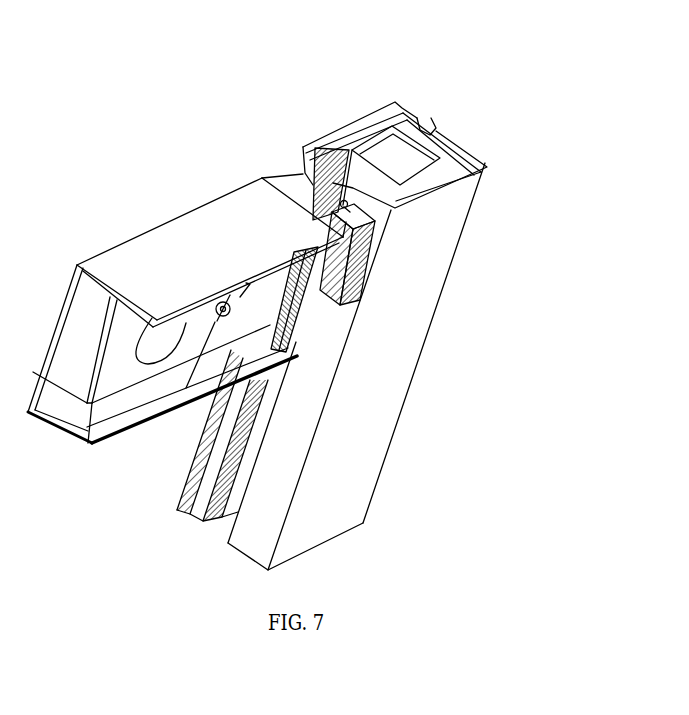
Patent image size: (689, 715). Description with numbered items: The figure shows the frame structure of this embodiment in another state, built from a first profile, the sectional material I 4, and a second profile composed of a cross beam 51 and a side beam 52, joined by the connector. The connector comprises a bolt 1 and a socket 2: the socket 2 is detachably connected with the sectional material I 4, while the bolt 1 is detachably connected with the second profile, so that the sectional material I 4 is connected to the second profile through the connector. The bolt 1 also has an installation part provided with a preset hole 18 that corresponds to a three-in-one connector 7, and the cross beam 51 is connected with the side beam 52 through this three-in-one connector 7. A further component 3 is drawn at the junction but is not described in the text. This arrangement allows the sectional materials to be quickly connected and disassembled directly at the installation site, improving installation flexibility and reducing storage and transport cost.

The bolt 1 is at (387, 113).
The socket 2 is at (457, 111).
The connecting block 3 is at (431, 278).
The sectional material I 4 is at (455, 70).
The three-in-one connector 7 is at (177, 428).
The preset hole 18 is at (453, 181).
The cross beam 51 is at (187, 263).
The side beam 52 is at (391, 366).